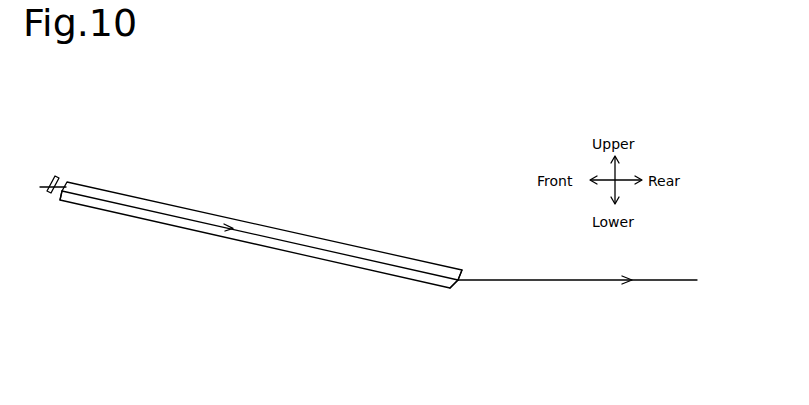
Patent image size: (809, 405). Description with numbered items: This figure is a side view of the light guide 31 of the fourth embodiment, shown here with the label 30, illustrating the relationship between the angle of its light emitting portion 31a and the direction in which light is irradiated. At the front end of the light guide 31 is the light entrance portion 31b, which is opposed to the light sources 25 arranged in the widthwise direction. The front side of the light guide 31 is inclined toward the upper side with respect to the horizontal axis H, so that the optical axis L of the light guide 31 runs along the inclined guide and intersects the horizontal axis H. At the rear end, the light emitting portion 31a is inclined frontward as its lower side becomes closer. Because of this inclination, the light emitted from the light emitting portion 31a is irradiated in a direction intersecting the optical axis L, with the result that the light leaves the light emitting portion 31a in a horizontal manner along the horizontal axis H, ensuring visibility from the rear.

The light source 25 is at (62, 178).
The board assembly 30 is at (261, 216).
The light guide 31 is at (273, 226).
The light emitting portion 31a is at (460, 281).
The light entrance portion 31b is at (61, 202).
The optical axis L is at (147, 208).
The horizontal axis H is at (587, 281).